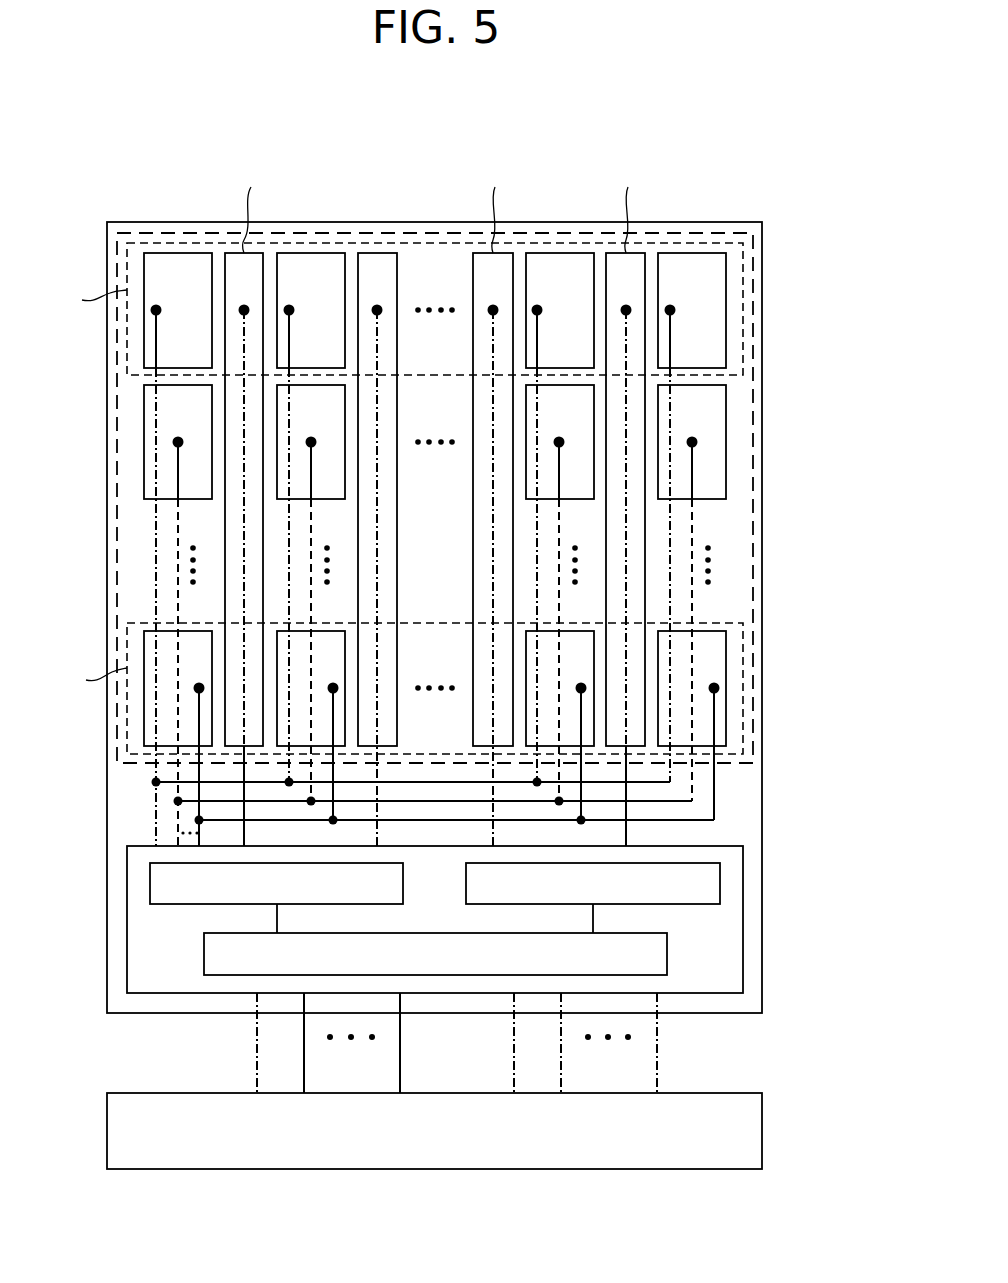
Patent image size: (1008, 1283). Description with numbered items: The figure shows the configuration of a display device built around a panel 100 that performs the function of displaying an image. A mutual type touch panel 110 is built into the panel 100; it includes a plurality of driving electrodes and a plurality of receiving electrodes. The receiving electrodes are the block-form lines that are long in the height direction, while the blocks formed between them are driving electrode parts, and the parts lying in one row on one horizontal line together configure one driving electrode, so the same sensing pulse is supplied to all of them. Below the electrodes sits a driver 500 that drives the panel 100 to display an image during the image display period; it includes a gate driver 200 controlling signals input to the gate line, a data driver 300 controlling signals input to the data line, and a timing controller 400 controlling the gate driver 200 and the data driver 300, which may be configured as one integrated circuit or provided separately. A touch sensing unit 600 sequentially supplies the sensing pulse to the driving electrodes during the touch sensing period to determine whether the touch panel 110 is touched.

The panel 100 is at (763, 297).
The touch panel 110 is at (697, 235).
The gate driver 200 is at (276, 883).
The data driver 300 is at (593, 883).
The timing controller 400 is at (435, 954).
The driver 500 is at (482, 919).
The touch sensing unit 600 is at (434, 1131).